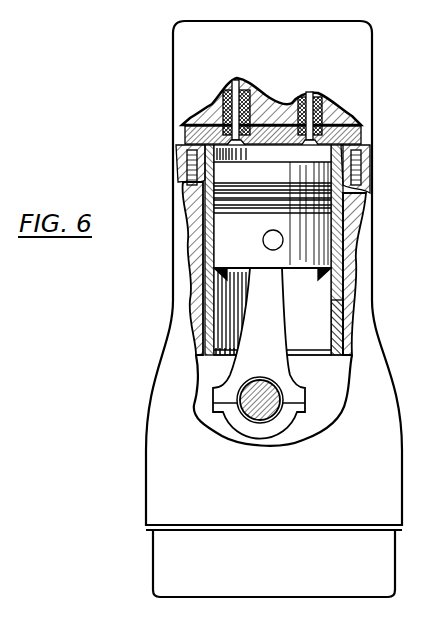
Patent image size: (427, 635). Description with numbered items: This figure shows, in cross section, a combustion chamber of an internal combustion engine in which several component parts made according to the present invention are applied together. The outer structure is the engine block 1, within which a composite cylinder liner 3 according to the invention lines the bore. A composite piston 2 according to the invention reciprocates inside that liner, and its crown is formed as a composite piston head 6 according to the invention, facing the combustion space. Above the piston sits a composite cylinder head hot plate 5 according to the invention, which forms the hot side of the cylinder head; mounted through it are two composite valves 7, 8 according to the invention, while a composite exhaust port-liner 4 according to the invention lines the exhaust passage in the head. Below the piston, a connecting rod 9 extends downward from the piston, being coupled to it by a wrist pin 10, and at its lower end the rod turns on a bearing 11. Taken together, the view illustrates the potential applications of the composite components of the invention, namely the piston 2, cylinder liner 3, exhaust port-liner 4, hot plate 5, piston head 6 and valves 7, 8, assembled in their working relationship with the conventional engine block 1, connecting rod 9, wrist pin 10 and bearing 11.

The engine block 1 is at (368, 170).
The composite piston 2 is at (207, 232).
The composite cylinder liner 3 is at (350, 302).
The composite exhaust port-liner 4 is at (262, 97).
The composite cylinder head hot plate 5 is at (184, 130).
The composite piston head 6 is at (232, 174).
The composite valve 7 is at (226, 105).
The composite valve 8 is at (317, 112).
The connecting rod 9 is at (277, 301).
The wrist pin 10 is at (263, 240).
The bearing 11 is at (262, 421).